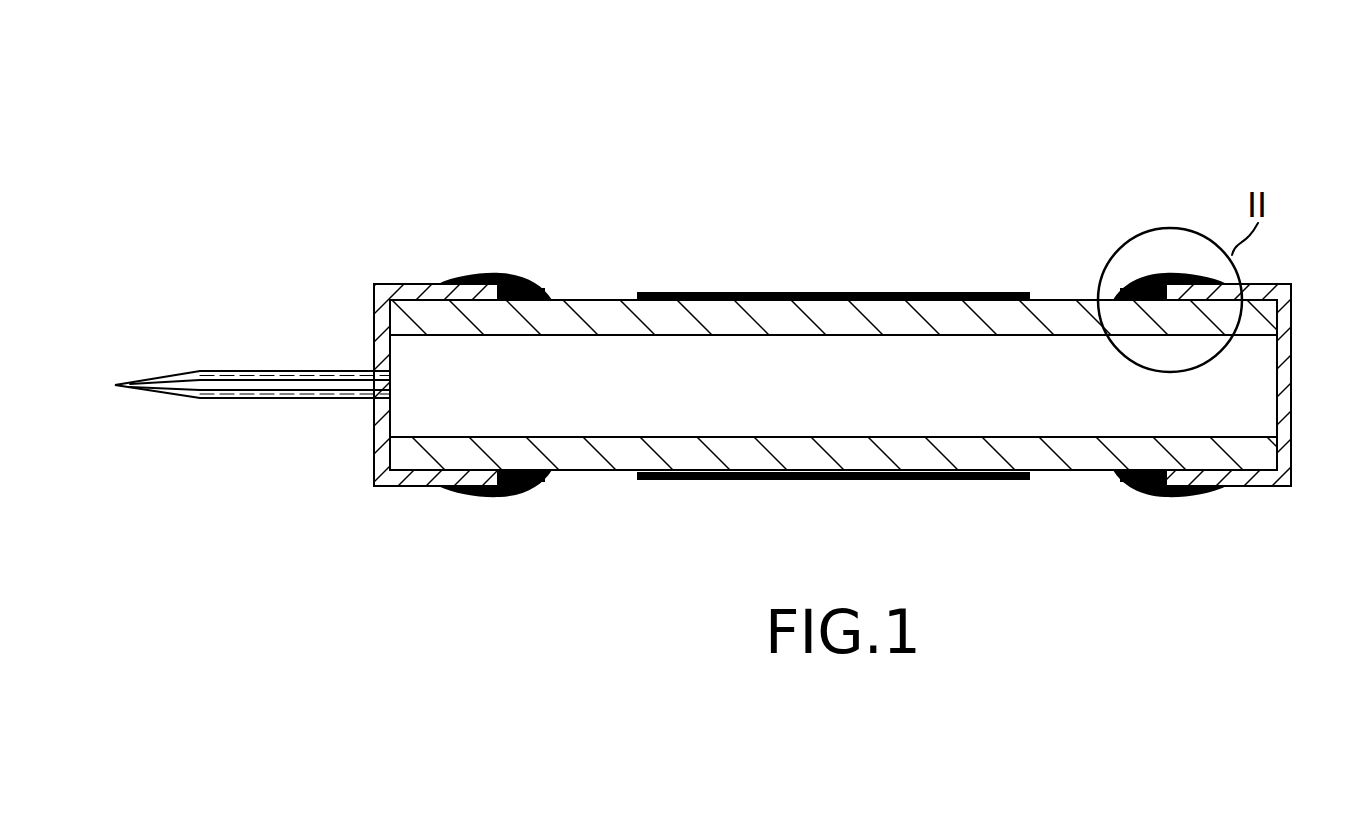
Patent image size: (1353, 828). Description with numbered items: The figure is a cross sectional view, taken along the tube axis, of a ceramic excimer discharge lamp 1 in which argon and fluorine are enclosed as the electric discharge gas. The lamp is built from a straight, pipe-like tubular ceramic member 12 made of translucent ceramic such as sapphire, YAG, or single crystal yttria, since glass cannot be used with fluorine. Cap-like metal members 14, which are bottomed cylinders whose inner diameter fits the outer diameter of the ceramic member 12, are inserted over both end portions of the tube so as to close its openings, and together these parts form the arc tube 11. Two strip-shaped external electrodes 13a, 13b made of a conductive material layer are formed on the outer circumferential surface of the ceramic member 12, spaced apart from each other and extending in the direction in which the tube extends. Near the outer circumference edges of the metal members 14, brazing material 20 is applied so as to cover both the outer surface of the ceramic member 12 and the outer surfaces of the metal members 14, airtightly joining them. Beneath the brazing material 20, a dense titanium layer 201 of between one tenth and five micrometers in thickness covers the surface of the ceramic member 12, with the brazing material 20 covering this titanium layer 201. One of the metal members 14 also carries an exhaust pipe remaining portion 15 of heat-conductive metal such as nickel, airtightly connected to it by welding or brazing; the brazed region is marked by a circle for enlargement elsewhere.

The discharge lamp 1 is at (983, 168).
The arc tube 11 is at (1048, 295).
The tubular ceramic member 12 is at (814, 312).
The external electrode 13a is at (700, 292).
The external electrode 13b is at (673, 480).
The metal member 14 is at (418, 284).
The exhaust pipe remaining portion 15 is at (310, 372).
The brazing material 20 is at (483, 273).
The titanium layer 201 is at (530, 287).